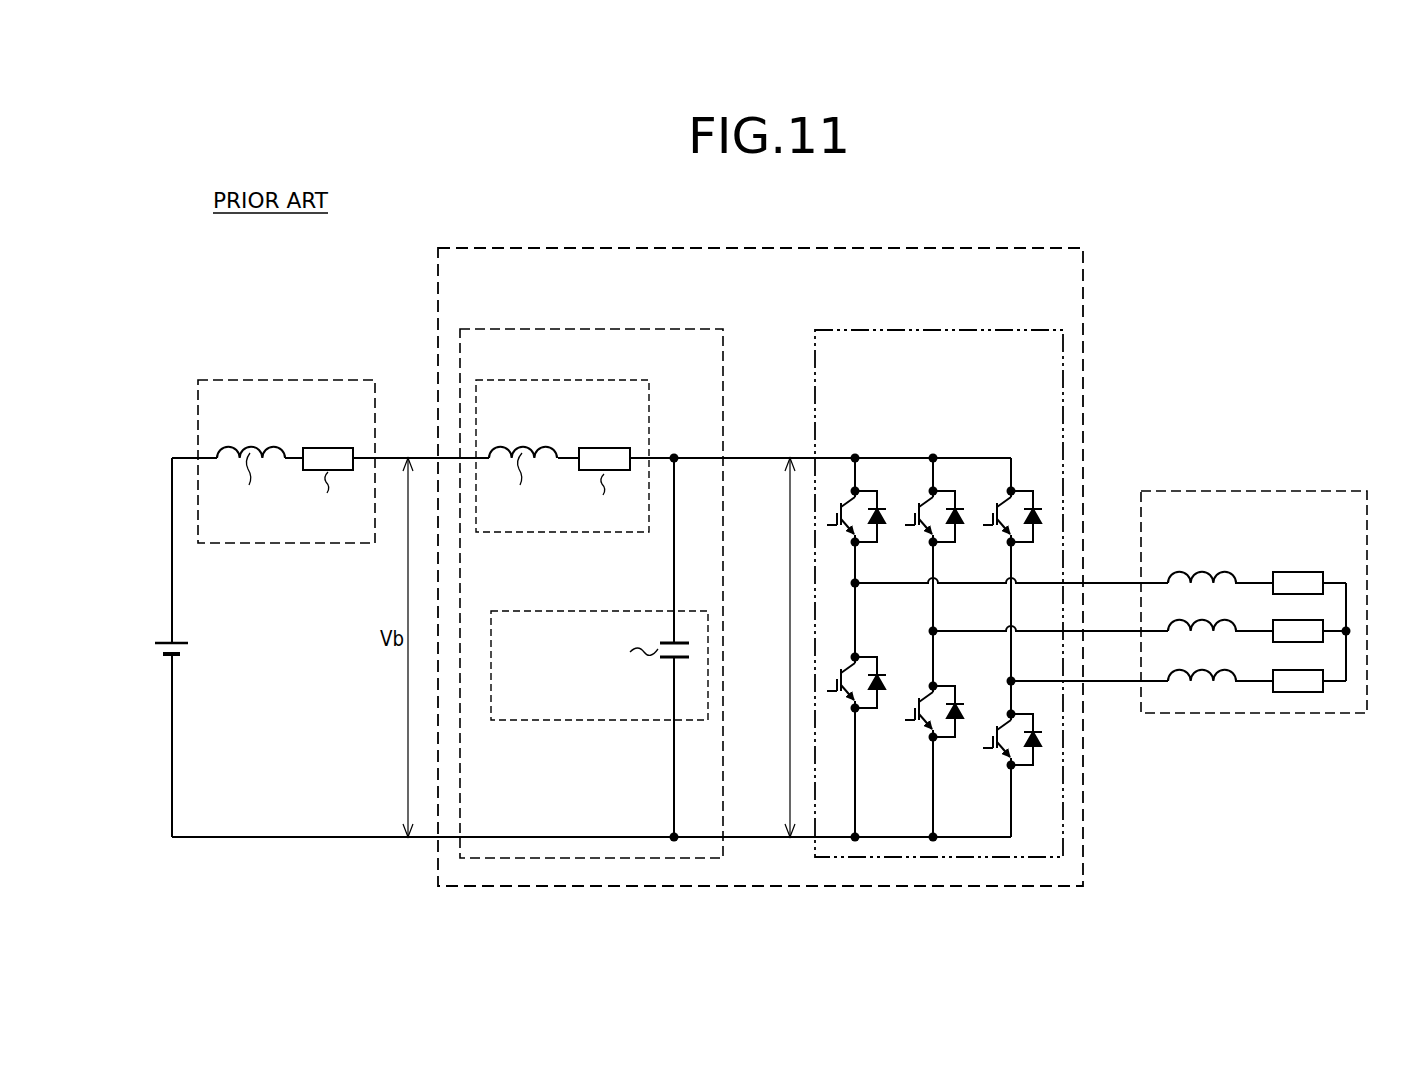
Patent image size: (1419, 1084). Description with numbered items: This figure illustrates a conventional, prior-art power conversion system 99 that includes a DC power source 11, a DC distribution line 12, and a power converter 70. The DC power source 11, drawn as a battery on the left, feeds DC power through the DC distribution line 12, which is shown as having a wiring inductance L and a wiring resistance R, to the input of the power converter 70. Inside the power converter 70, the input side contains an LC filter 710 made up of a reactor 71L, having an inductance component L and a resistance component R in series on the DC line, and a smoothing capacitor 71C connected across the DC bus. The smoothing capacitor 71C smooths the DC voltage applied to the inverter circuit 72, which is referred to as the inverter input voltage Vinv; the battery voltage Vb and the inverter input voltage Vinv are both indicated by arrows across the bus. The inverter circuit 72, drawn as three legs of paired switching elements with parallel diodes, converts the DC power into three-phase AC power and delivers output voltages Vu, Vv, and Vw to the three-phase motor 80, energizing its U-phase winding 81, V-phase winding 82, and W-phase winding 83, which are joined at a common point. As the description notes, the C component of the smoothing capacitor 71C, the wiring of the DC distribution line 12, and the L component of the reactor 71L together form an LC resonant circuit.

The DC power source 11 is at (168, 642).
The DC distribution line 12 is at (270, 380).
The power converter 70 is at (783, 248).
The LC filter 710 is at (588, 329).
The reactor 71L is at (523, 532).
The smoothing capacitor 71C is at (613, 611).
The inverter circuit 72 is at (933, 330).
The three-phase motor 80 is at (1254, 571).
The U-phase winding 81 is at (1201, 573).
The V-phase winding 82 is at (1201, 621).
The W-phase winding 83 is at (1201, 670).
The power conversion system 99 is at (1169, 278).